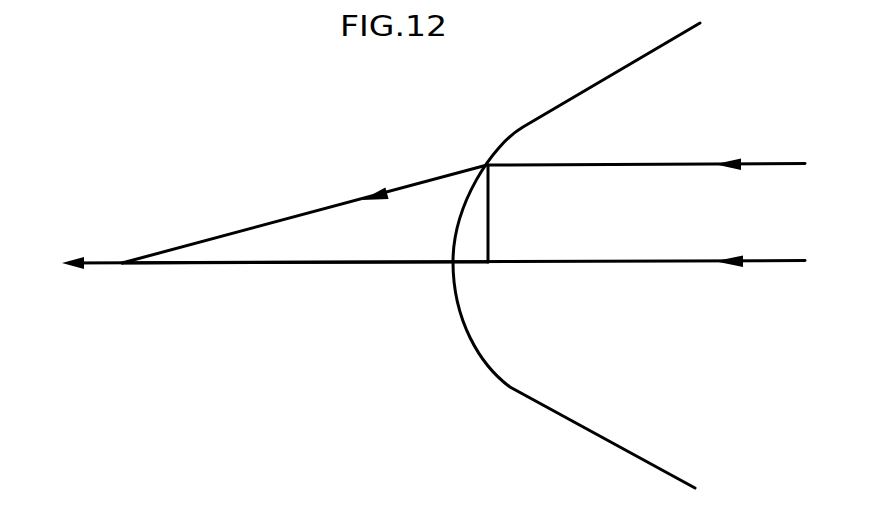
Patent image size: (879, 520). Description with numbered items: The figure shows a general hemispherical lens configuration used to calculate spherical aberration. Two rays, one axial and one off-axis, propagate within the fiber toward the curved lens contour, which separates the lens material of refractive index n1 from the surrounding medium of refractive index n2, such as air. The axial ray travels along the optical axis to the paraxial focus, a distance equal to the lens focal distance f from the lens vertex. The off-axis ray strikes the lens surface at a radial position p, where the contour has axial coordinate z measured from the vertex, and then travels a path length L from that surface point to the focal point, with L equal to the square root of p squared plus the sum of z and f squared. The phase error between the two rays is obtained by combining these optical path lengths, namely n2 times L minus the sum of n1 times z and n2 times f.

The optical path length of off-axis ray L is at (304, 214).
The lens focal distance f is at (287, 280).
The lens radial coordinate p is at (505, 213).
The lens axial coordinate z is at (470, 278).
The refractive index of lens material n1 is at (576, 255).
The refractive index of medium surrounding the lens n2 is at (315, 297).